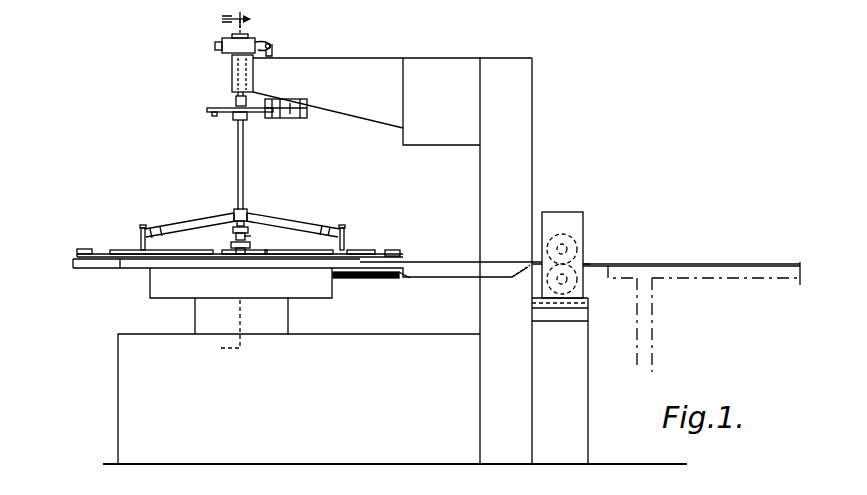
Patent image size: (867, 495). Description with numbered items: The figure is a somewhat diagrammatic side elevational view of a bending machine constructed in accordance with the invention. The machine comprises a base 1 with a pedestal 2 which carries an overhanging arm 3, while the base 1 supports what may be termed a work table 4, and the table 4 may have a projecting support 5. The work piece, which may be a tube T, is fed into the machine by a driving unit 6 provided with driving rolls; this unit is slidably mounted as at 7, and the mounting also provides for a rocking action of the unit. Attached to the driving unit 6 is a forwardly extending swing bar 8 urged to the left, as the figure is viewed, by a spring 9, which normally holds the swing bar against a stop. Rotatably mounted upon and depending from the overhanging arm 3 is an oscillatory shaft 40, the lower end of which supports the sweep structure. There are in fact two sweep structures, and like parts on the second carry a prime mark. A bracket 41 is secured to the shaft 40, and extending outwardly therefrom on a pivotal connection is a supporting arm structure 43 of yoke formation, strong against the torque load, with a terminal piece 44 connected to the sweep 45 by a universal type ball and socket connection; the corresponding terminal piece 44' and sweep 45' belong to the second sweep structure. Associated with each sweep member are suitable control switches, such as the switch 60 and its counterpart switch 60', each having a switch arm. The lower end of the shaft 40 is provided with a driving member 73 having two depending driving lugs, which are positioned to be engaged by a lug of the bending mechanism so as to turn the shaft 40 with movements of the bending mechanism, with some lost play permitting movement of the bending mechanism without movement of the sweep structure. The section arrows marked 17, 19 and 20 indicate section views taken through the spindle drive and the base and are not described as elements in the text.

The base 1 is at (418, 460).
The pedestal 2 is at (532, 160).
The overhanging arm 3 is at (388, 62).
The work table 4 is at (135, 270).
The projecting support 5 is at (75, 257).
The driving unit 6 is at (565, 212).
The slidable mounting 7 is at (588, 308).
The swing bar 8 is at (452, 278).
The spring 9 is at (380, 279).
The section line 17 is at (186, 97).
The section line 19 is at (206, 30).
The section line 20 is at (82, 362).
The oscillatory shaft 40 is at (244, 150).
The bracket 41 is at (249, 212).
The supporting arm structure 43 is at (185, 222).
The terminal piece 44 is at (135, 225).
The terminal piece 44' is at (330, 226).
The sweep 45 is at (183, 241).
The sweep 45' is at (320, 242).
The control switch 60 is at (78, 234).
The control switch 60' is at (414, 244).
The driving member 73 is at (250, 236).
The tube T is at (597, 262).